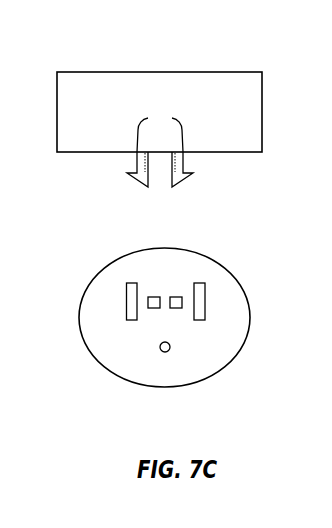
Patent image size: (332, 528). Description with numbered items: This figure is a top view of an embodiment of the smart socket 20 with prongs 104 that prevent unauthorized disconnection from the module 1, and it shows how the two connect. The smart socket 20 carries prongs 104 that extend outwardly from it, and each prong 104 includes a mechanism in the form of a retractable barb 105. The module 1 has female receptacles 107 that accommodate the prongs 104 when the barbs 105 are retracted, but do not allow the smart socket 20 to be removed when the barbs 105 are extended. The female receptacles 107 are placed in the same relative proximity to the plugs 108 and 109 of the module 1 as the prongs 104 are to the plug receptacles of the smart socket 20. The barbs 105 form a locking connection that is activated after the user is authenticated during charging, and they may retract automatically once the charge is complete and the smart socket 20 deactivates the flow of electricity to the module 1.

The smart socket 20 is at (158, 58).
The prongs 104 is at (160, 127).
The retractable barbs 105 is at (140, 184).
The module 1 is at (118, 378).
The plugs 108 is at (131, 283).
The female receptacles 107 is at (176, 297).
The plug 109 is at (170, 346).